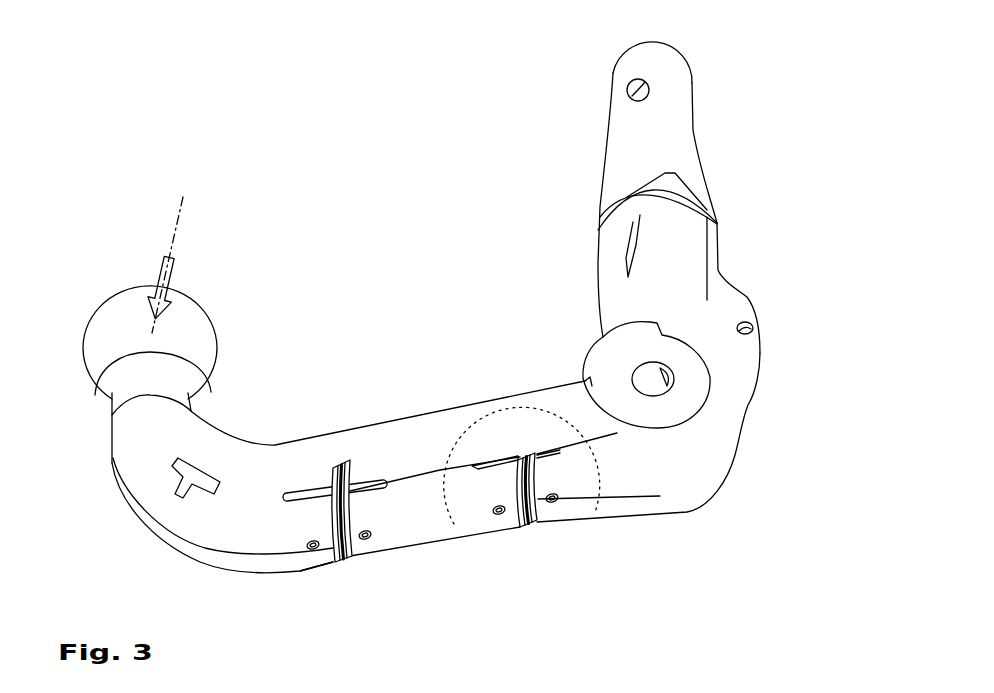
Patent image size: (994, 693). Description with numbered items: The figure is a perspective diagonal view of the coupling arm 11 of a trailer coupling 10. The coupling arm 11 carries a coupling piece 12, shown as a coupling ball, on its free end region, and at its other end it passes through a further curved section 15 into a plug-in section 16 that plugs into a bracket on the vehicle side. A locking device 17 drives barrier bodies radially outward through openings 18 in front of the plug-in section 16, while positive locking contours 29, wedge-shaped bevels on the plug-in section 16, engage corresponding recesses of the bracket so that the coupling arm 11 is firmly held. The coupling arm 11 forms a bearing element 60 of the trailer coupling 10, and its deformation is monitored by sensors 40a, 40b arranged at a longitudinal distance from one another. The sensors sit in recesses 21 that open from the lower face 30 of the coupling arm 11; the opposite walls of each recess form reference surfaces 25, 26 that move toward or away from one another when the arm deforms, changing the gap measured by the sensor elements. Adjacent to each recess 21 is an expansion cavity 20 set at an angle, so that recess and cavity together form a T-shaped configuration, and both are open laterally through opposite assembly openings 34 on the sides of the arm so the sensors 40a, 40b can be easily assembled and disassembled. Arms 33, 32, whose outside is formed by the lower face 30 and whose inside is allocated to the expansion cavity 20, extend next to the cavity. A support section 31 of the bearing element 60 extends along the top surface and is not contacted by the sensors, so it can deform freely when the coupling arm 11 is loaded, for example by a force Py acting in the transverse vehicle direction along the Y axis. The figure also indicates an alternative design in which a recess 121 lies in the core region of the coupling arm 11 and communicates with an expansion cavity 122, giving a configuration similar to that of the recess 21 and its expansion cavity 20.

The trailer coupling 10 is at (173, 145).
The Y axis Y is at (178, 228).
The force Py is at (172, 277).
The coupling arm 11 is at (240, 437).
The coupling piece 12 is at (214, 340).
The recess 121 is at (180, 493).
The expansion cavity 122 is at (113, 458).
The curved section 15 is at (717, 467).
The plug-in section 16 is at (707, 175).
The locking device 17 is at (703, 97).
The openings 18 is at (627, 87).
The positive locking contours 29 is at (652, 207).
The expansion cavity 20 is at (490, 460).
The recesses 21 is at (334, 562).
The reference surface 25 is at (340, 492).
The reference surface 26 is at (530, 456).
The lower face 30 is at (270, 560).
The support section 31 is at (300, 488).
The arm 32 is at (485, 497).
The arm 33 is at (563, 480).
The assembly openings 34 is at (353, 483).
The sensor 40a is at (338, 556).
The sensor 40b is at (527, 510).
The bearing element 60 is at (733, 433).